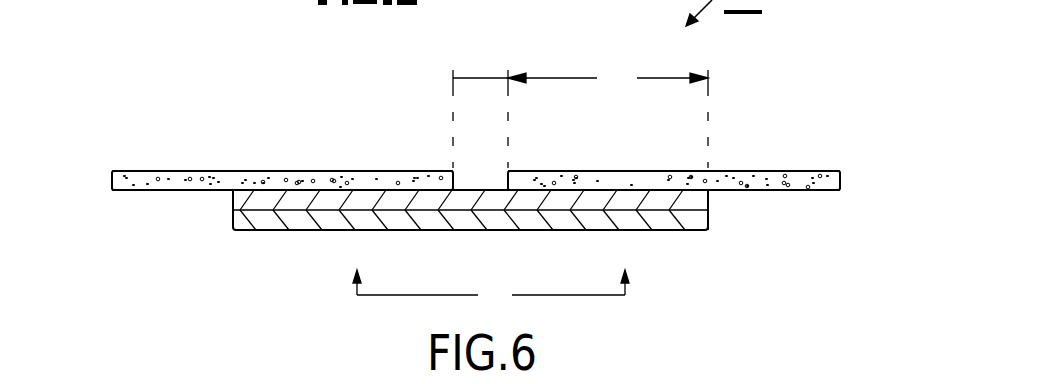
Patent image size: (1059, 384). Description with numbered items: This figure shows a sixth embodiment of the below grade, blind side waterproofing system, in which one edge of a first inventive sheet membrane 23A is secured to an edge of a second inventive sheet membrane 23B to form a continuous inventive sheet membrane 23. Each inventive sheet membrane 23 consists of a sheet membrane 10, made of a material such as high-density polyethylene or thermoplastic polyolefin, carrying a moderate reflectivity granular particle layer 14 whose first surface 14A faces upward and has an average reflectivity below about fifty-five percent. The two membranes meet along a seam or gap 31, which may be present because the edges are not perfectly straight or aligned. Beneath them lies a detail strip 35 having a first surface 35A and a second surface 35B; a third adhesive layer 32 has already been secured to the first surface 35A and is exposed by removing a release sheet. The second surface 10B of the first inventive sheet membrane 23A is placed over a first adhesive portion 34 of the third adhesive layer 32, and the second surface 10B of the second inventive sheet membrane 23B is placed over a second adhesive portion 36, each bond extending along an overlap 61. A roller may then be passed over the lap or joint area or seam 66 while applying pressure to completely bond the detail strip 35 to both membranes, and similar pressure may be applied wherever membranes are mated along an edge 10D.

The sheet membrane 10 is at (133, 192).
The second surface of sheet membrane 10B is at (158, 193).
The edge 10D is at (417, 192).
The moderate reflectivity granular particle layer 14 is at (305, 170).
The first surface of granular particle layer 14A is at (133, 170).
The inventive sheet membrane 23 is at (230, 170).
The first inventive sheet membrane 23A is at (818, 168).
The second inventive sheet membrane 23B is at (203, 170).
The seam or gap 31 is at (480, 77).
The third adhesive layer 32 is at (710, 204).
The first adhesive portion 34 is at (600, 188).
The detail strip 35 is at (630, 232).
The first surface of detail strip 35A is at (330, 213).
The second surface of detail strip 35B is at (277, 232).
The second adhesive portion 36 is at (340, 196).
The overlap 61 is at (608, 117).
The seam 66 is at (491, 289).